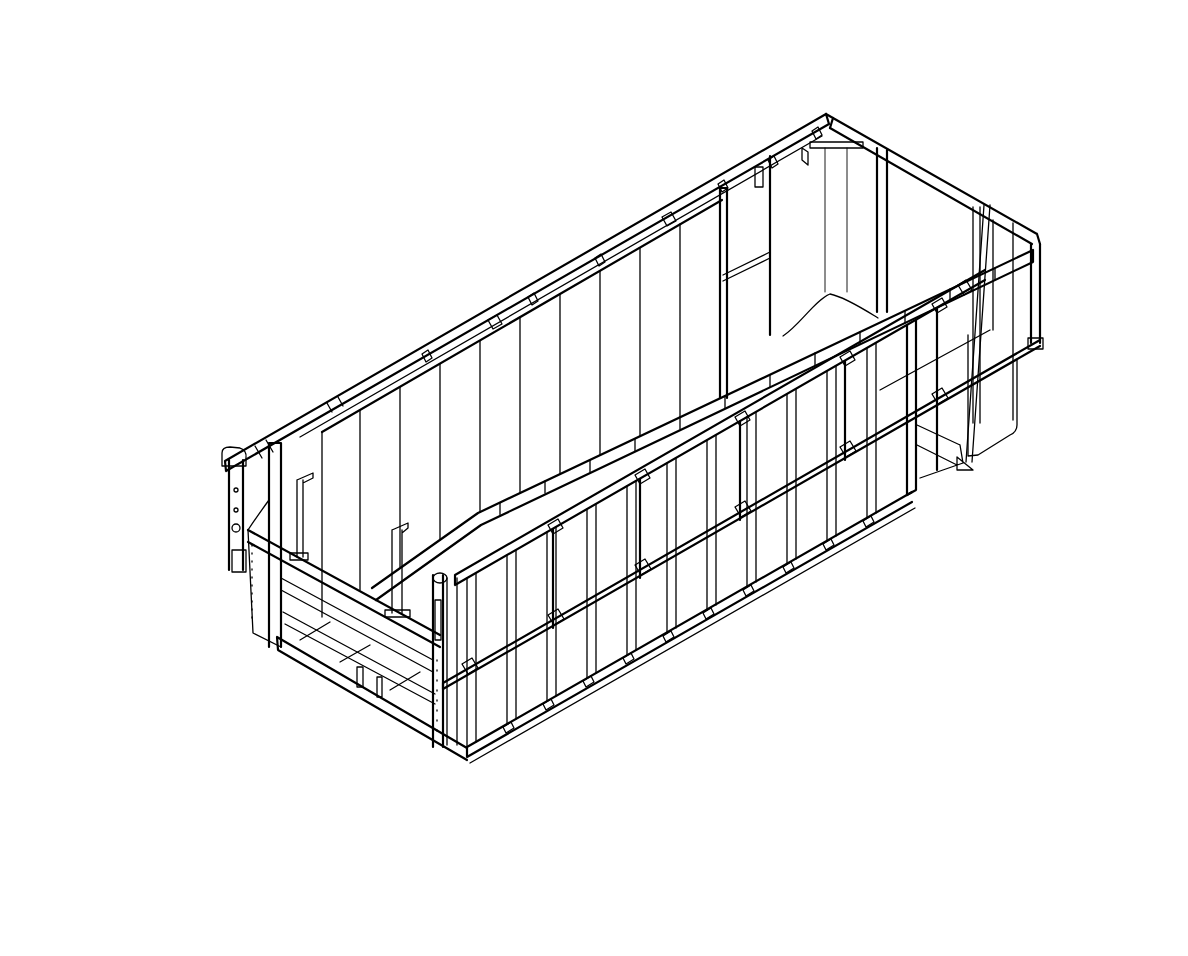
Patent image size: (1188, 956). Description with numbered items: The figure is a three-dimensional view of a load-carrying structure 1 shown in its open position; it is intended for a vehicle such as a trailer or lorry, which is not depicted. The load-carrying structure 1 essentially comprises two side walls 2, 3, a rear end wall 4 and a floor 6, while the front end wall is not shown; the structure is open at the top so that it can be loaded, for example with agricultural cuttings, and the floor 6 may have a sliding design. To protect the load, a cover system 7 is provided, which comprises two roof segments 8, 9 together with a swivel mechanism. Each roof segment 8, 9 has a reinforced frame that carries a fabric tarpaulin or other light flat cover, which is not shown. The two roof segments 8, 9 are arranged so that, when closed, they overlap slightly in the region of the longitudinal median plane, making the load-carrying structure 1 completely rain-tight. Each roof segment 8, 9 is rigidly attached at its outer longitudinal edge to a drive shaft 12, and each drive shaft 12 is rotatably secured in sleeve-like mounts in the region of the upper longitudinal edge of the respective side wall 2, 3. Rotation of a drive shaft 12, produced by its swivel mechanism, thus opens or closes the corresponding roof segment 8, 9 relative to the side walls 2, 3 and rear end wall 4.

The load-carrying structure 1 is at (1002, 101).
The side wall 2 is at (425, 410).
The side wall 3 is at (615, 620).
The rear end wall 4 is at (933, 217).
The floor 6 is at (325, 630).
The cover system 7 is at (1077, 240).
The roof segment 8 is at (233, 528).
The roof segment 9 is at (497, 657).
The drive shaft 12 is at (262, 432).